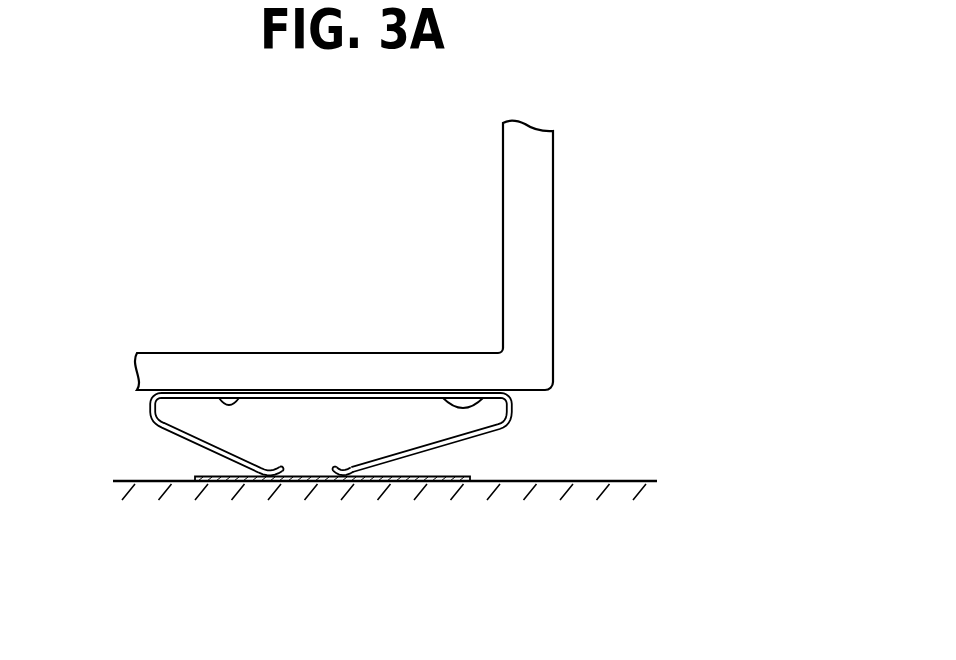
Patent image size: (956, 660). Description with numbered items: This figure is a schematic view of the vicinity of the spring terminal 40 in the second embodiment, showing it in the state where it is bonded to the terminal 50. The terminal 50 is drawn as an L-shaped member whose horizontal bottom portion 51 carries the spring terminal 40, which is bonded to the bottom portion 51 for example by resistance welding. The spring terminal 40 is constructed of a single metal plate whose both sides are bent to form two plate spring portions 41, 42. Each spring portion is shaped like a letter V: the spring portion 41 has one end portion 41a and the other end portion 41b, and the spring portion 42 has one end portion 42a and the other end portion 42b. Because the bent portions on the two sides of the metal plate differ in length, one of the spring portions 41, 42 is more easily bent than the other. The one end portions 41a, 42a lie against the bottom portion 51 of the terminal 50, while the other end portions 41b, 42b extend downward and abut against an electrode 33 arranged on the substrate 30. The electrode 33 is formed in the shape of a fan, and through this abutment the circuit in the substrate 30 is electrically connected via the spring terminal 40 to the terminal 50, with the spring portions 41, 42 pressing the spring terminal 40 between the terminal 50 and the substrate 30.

The substrate 30 is at (583, 493).
The electrode 33 is at (448, 483).
The spring terminal 40 is at (356, 426).
The spring portion 41 is at (447, 443).
The one end portion 41a is at (478, 400).
The other end portion 41b is at (352, 483).
The spring portion 42 is at (181, 440).
The one end portion 42a is at (235, 398).
The other end portion 42b is at (268, 484).
The terminal 50 is at (396, 255).
The bottom portion 51 is at (371, 390).